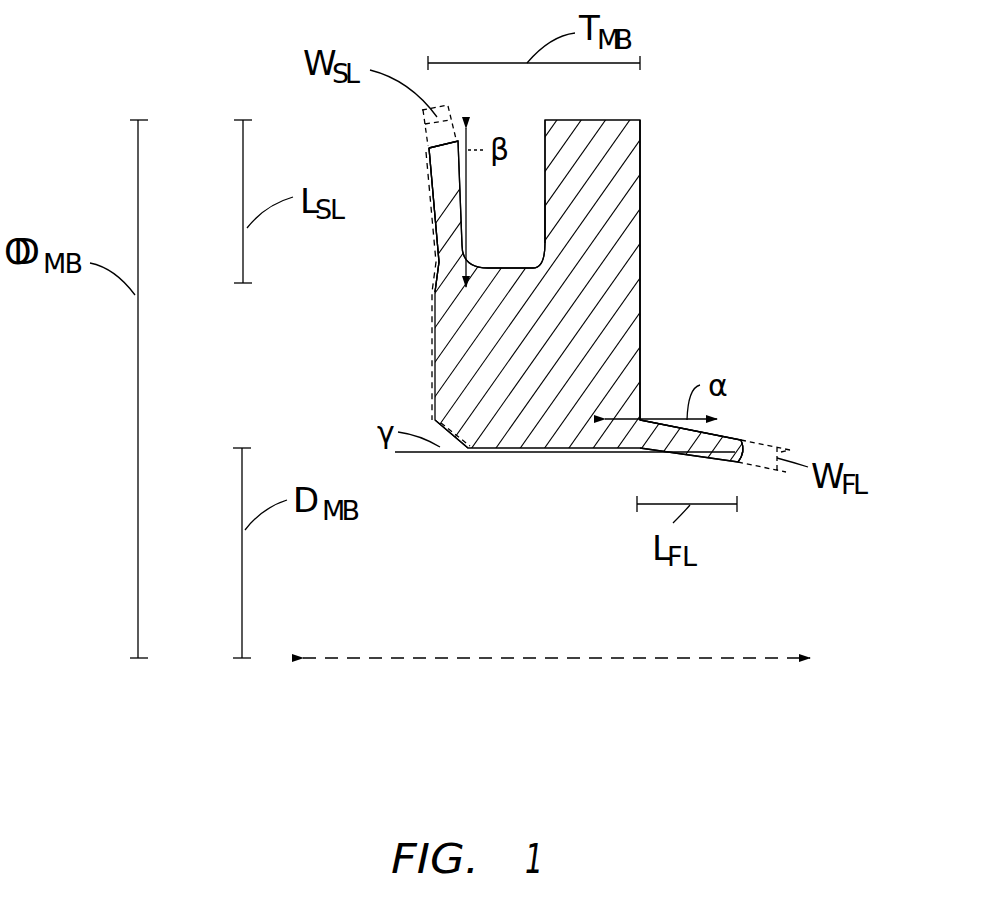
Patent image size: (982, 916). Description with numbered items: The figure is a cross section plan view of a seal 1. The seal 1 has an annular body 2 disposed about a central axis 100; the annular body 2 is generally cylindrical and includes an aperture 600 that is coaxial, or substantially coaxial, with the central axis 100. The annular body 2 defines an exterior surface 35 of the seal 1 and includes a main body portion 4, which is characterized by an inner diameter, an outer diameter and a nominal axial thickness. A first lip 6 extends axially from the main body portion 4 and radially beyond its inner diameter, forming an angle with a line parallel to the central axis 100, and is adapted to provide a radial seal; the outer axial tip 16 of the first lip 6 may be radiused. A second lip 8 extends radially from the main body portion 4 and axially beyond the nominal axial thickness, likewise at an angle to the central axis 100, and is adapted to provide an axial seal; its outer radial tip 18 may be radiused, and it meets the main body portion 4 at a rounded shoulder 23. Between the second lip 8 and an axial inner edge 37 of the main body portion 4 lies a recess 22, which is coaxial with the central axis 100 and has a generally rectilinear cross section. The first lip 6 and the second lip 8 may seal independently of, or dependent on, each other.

The seal 1 is at (714, 157).
The annular body 2 is at (643, 275).
The main body portion 4 is at (645, 330).
The first lip 6 is at (732, 440).
The second lip 8 is at (459, 137).
The outer axial tip 16 is at (740, 460).
The outer radial tip 18 is at (428, 148).
The recess 22 is at (521, 146).
The rounded shoulder 23 is at (437, 288).
The exterior surface 35 is at (440, 430).
The axial inner edge 37 is at (545, 235).
The central axis 100 is at (680, 660).
The aperture 600 is at (367, 579).